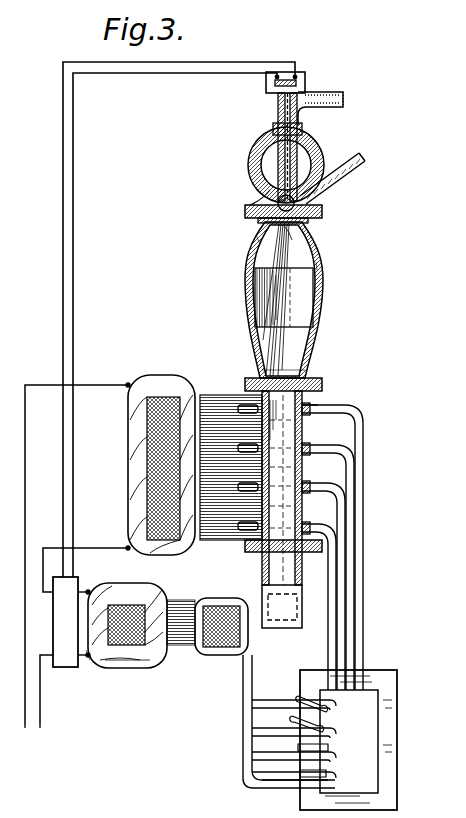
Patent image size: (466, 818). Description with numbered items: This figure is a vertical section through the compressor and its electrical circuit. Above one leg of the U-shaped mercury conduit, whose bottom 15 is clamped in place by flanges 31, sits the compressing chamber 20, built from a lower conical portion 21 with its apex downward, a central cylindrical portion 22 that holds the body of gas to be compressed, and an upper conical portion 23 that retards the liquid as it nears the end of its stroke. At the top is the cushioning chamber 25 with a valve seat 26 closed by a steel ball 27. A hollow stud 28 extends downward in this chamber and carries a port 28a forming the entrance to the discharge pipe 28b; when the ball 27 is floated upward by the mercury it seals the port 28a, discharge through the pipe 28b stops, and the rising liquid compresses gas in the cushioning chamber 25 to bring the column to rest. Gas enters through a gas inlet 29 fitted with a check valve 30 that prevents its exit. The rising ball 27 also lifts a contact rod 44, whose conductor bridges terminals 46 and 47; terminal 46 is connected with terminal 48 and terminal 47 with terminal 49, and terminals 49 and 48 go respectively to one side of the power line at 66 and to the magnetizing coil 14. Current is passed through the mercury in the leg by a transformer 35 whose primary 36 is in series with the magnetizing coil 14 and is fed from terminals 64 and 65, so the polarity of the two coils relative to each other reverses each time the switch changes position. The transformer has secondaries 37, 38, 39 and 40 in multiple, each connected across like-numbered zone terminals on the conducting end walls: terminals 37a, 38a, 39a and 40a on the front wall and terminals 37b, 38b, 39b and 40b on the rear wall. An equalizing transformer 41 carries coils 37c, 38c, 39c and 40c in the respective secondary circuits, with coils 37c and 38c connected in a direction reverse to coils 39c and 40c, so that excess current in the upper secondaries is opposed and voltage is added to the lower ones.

The electric coil 14 is at (166, 383).
The bottom of the U 15 is at (302, 616).
The compressing chamber 20 is at (239, 302).
The lower conical portion 21 is at (318, 354).
The central cylindrical portion 22 is at (303, 299).
The upper conical portion 23 is at (323, 266).
The cushioning chamber 25 is at (317, 150).
The valve seat 26 is at (258, 237).
The ball 27 is at (258, 198).
The hollow stud 28 is at (282, 152).
The port 28a is at (280, 196).
The discharge pipe 28b is at (323, 92).
The gas inlet 29 is at (357, 178).
The check valve 30 is at (308, 233).
The flanges 31 is at (323, 212).
The transformer 35 is at (183, 640).
The primary 36 is at (132, 664).
The secondary 37 is at (364, 418).
The terminal 37a is at (310, 414).
The terminal 37b is at (256, 414).
The coil 37c is at (306, 694).
The secondary 38 is at (365, 463).
The terminal 38a is at (310, 454).
The terminal 38b is at (256, 453).
The coil 38c is at (302, 716).
The secondary 39 is at (366, 503).
The terminal 39a is at (310, 492).
The terminal 39b is at (256, 492).
The coil 39c is at (300, 760).
The secondary 40 is at (363, 575).
The terminal 40a is at (310, 533).
The terminal 40b is at (256, 531).
The coil 40c is at (312, 785).
The equalizing transformer 41 is at (392, 702).
The contact rod 44 is at (280, 107).
The terminal 46 is at (164, 75).
The terminal 47 is at (203, 62).
The terminal 48 is at (53, 590).
The terminal 49 is at (53, 650).
The terminal 64 is at (92, 590).
The terminal 65 is at (90, 660).
The power line 66 is at (31, 738).